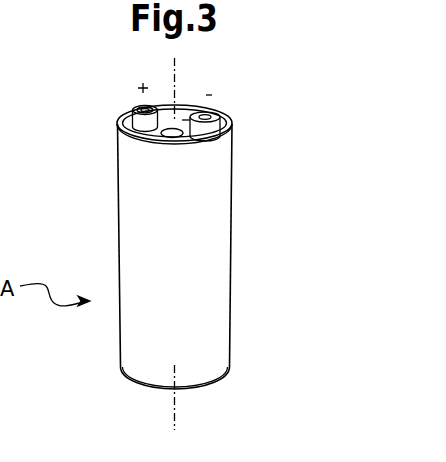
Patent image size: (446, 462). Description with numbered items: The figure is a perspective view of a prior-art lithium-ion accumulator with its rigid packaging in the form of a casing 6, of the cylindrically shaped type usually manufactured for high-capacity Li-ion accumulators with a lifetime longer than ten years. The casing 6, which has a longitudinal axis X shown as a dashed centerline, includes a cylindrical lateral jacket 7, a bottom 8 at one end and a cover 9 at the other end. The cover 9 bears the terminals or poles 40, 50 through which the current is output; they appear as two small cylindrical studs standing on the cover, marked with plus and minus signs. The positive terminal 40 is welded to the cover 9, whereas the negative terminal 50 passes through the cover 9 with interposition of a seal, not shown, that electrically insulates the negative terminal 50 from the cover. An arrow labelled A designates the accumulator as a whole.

The casing 6 is at (208, 245).
The cylindrical lateral jacket 7 is at (230, 305).
The bottom 8 is at (140, 387).
The cover 9 is at (228, 118).
The positive terminal 40 is at (143, 129).
The negative terminal 50 is at (205, 138).